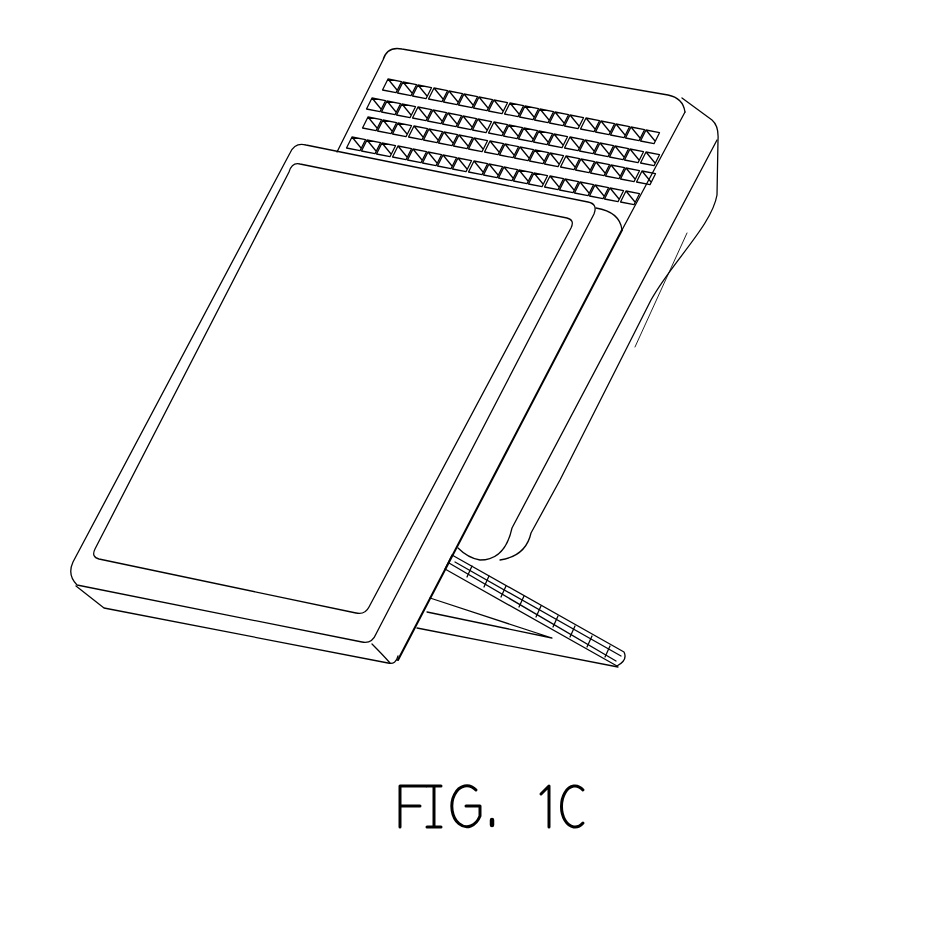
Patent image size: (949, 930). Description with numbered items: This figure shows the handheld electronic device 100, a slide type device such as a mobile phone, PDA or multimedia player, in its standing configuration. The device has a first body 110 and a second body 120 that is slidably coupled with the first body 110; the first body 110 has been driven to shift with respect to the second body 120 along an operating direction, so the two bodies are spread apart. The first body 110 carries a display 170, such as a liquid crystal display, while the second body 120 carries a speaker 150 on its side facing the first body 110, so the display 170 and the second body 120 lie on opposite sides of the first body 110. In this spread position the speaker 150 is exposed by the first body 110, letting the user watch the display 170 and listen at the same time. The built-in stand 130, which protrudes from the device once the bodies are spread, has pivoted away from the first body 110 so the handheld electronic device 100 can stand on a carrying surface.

The handheld electronic device 100 is at (928, 601).
The first body 110 is at (325, 155).
The second body 120 is at (687, 173).
The stand 130 is at (582, 653).
The speaker 150 is at (622, 118).
The display 170 is at (273, 224).